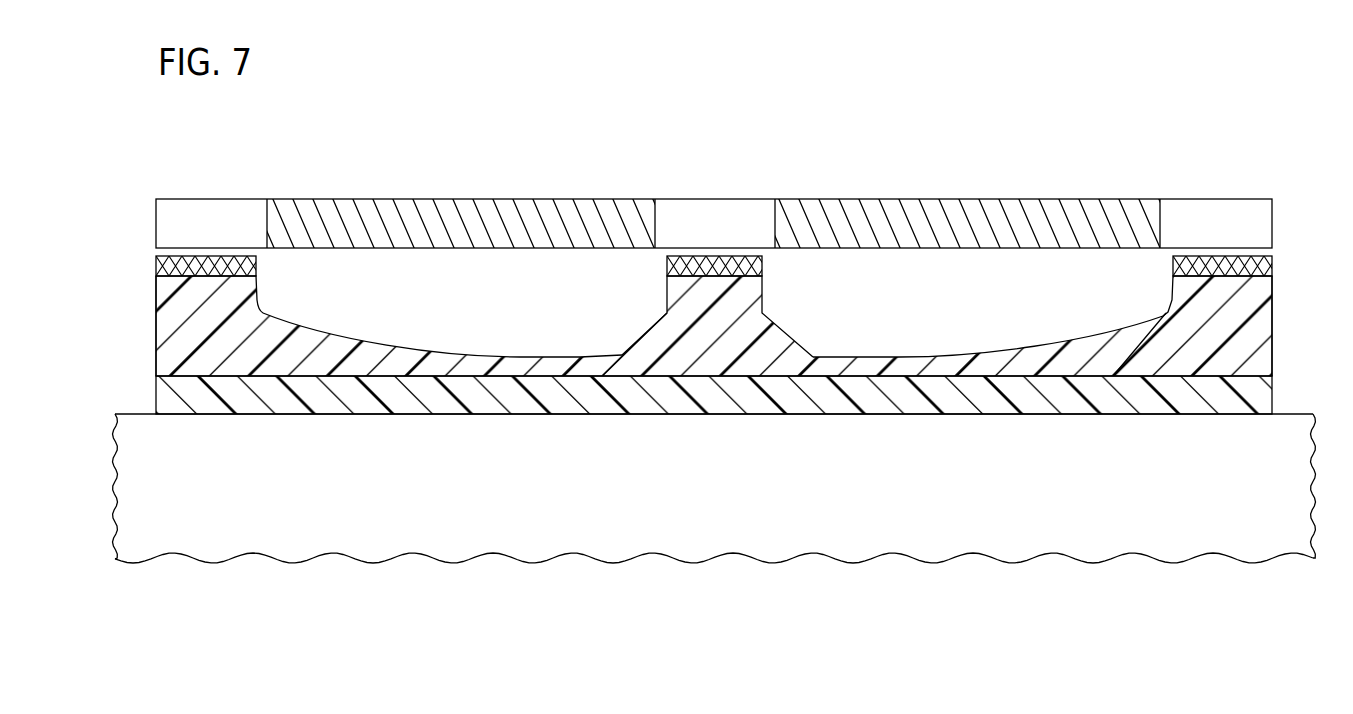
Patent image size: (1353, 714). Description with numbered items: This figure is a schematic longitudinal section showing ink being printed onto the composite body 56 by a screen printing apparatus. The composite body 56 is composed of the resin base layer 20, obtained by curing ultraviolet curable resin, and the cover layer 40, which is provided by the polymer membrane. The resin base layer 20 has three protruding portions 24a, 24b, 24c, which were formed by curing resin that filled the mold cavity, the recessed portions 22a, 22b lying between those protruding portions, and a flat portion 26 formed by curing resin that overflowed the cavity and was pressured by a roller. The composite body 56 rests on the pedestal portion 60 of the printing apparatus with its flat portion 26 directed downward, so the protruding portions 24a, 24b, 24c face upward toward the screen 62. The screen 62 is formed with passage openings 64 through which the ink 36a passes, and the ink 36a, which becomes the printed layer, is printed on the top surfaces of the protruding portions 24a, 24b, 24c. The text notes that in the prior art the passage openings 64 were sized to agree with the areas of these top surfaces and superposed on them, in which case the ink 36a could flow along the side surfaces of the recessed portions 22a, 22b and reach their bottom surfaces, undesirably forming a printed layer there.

The resin base layer 20 is at (1089, 361).
The recessed portion 22a is at (988, 350).
The recessed portion 22b is at (378, 342).
The protruding portion 24a is at (1247, 295).
The protruding portion 24b is at (745, 290).
The protruding portion 24c is at (245, 305).
The flat portion 26 is at (550, 367).
The ink 36a is at (1242, 255).
The cover layer 40 is at (1034, 402).
The composite body 56 is at (714, 383).
The pedestal portion 60 is at (900, 545).
The screen 62 is at (958, 218).
The passage opening 64 is at (1160, 212).